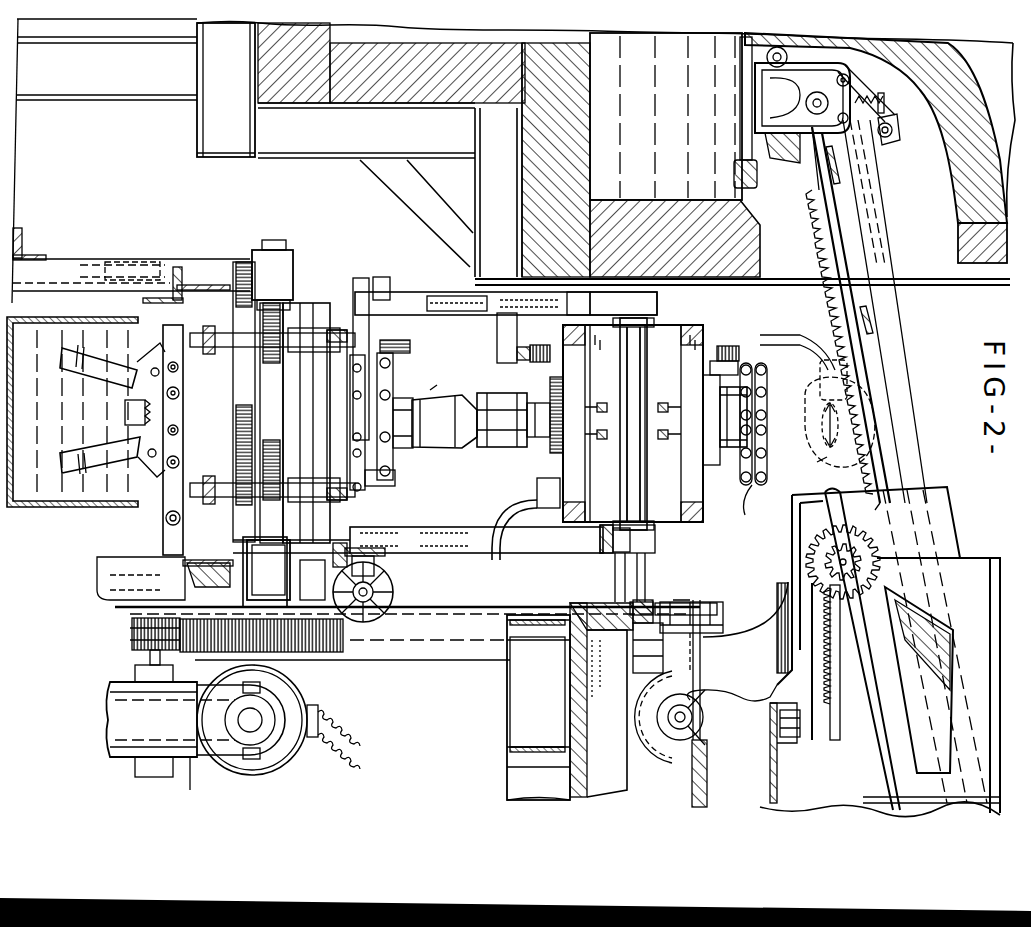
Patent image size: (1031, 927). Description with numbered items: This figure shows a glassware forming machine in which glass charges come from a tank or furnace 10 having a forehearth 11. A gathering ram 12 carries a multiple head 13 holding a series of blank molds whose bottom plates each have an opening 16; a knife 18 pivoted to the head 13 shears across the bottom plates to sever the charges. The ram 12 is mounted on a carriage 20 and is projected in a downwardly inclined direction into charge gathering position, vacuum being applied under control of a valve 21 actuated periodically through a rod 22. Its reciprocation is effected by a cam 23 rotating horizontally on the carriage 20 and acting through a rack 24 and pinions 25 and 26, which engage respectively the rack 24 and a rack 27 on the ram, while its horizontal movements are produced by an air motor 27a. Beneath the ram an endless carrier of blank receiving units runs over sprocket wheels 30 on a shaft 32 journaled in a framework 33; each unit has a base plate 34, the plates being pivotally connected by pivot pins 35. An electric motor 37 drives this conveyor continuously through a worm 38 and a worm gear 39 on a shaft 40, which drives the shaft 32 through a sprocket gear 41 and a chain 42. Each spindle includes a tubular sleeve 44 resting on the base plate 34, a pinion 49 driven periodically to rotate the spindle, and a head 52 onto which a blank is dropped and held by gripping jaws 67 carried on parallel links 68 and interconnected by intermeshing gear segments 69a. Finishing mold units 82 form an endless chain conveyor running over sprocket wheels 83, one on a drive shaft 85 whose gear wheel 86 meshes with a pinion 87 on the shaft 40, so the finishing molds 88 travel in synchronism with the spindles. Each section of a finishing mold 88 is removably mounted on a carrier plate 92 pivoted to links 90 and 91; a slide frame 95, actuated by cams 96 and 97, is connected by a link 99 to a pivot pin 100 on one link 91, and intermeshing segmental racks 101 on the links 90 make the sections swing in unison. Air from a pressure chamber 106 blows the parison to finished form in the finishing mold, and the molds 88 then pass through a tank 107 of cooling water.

The tank or furnace 10 is at (315, 142).
The forehearth 11 is at (733, 286).
The gathering ram 12 is at (900, 345).
The multiple head 13 is at (848, 82).
The opening 16 is at (762, 97).
The knife 18 is at (766, 170).
The carriage 20 is at (788, 584).
The valve 21 is at (884, 97).
The rod 22 is at (880, 203).
The cam 23 is at (780, 700).
The rack 24 is at (832, 632).
The pinion 25 is at (865, 605).
The pinion 26 is at (850, 530).
The rack 27 is at (815, 471).
The air motor 27a is at (640, 702).
The sprocket wheels 30 is at (593, 343).
The shaft 32 is at (625, 452).
The framework 33 is at (110, 260).
The base plate 34 is at (692, 366).
The pivot pins or studs 35 is at (400, 290).
The electric motor 37 is at (280, 748).
The worm 38 is at (270, 723).
The worm gear 39 is at (110, 688).
The shaft 40 is at (147, 662).
The sprocket gear 41 is at (117, 602).
The chain 42 is at (432, 607).
The tubular member or sleeve 44 is at (728, 427).
The pinion 49 is at (718, 345).
The head 52 is at (818, 405).
The gripping jaws 67 is at (475, 400).
The parallel links 68 is at (748, 492).
The intermeshing gear segments 69a is at (767, 447).
The finishing mold units 82 is at (426, 456).
The sprocket wheels 83 is at (277, 363).
The shaft 85 is at (273, 432).
The gear wheel 86 is at (328, 655).
The pinion 87 is at (133, 633).
The finishing mold 88 is at (93, 370).
The link 90 is at (365, 435).
The link 91 is at (382, 480).
The carrier plate 92 is at (393, 372).
The slide frame 95 is at (325, 300).
The cam 96 is at (377, 533).
The cam 97 is at (150, 297).
The link 99 is at (382, 277).
The pivot pin 100 is at (400, 465).
The intermeshing segmental racks 101 is at (327, 372).
The pressure chamber 106 is at (533, 478).
The tank 107 is at (48, 507).